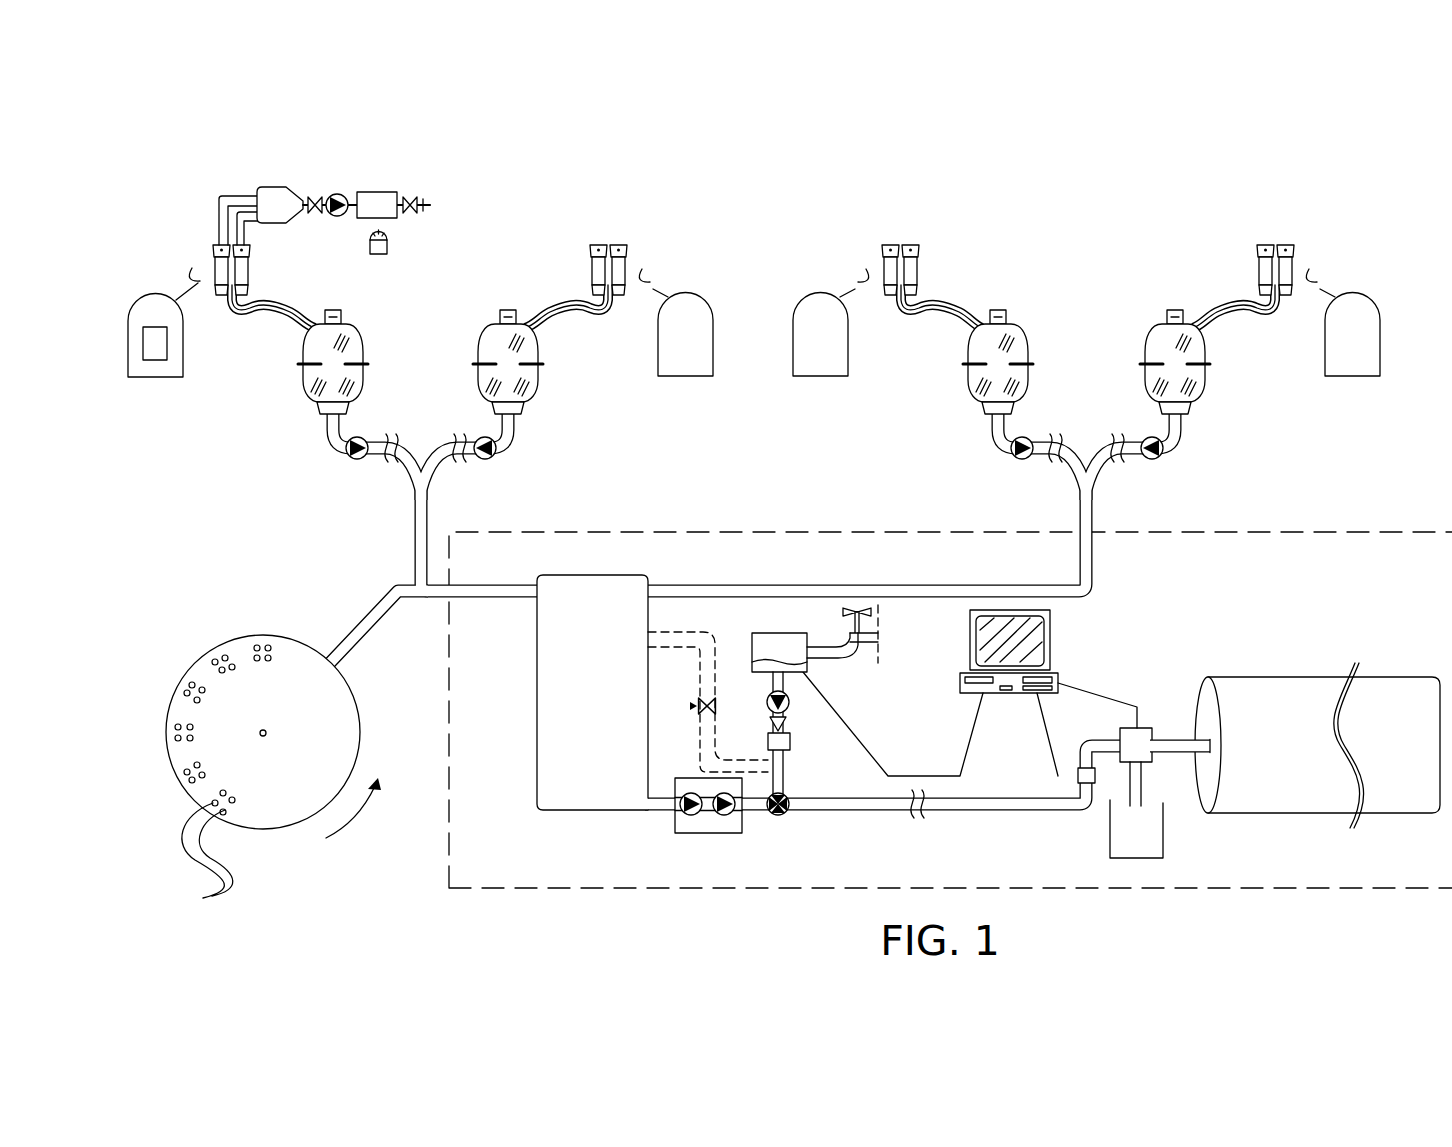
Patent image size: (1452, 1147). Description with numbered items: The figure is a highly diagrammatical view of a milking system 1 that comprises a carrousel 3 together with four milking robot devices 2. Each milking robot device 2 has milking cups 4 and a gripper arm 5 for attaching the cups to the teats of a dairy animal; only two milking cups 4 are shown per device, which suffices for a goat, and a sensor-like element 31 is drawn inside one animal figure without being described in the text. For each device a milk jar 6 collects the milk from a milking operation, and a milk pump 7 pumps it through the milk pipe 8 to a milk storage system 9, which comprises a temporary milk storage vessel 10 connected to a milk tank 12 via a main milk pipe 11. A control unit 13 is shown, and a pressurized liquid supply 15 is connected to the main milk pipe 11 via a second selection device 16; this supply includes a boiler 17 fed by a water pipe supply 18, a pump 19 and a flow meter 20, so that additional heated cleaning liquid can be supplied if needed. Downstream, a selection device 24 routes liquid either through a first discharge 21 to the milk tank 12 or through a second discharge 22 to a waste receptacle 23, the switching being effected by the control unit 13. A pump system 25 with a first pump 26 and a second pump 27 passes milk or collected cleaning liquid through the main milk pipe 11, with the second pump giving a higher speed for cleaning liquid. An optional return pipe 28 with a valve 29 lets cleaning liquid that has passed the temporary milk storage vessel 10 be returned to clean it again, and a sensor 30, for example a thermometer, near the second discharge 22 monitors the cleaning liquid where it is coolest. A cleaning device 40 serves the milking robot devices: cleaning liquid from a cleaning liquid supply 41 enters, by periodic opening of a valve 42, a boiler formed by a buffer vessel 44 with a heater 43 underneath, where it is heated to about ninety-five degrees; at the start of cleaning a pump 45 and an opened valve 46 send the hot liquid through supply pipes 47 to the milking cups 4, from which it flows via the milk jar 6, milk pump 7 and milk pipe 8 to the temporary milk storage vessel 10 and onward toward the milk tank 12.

The milking system 1 is at (426, 866).
The milking robot device 2 is at (172, 368).
The carrousel 3 is at (263, 828).
The milking cups 4 is at (220, 265).
The gripper arm 5 is at (188, 288).
The milk jar 6 is at (343, 325).
The milk pump 7 is at (485, 438).
The milk pipe 8 is at (725, 592).
The milk storage system 9 is at (546, 886).
The temporary milk storage vessel 10 is at (537, 697).
The main milk pipe 11 is at (988, 808).
The milk tank 12 is at (1265, 677).
The control unit 13 is at (1046, 641).
The pressurized liquid supply 15 is at (830, 700).
The second selection device 16 is at (785, 816).
The boiler 17 is at (790, 657).
The water pipe supply 18 is at (853, 636).
The pump 19 is at (788, 741).
The flow meter 20 is at (789, 705).
The first discharge 21 is at (1166, 745).
The second discharge 22 is at (1137, 788).
The waste receptacle 23 is at (1139, 837).
The selection device 24 is at (1143, 730).
The pump system 25 is at (675, 833).
The first pump 26 is at (695, 816).
The second pump 27 is at (728, 816).
The return pipe 28 is at (670, 638).
The valve 29 is at (697, 700).
The sensor 30 is at (1088, 777).
The sensor 31 is at (155, 342).
The cleaning device 40 is at (230, 182).
The cleaning liquid supply 41 is at (424, 204).
The valve 42 is at (410, 197).
The heater 43 is at (378, 248).
The buffer vessel 44 is at (377, 192).
The pump 45 is at (340, 194).
The valve 46 is at (315, 197).
The supply pipes 47 is at (237, 198).